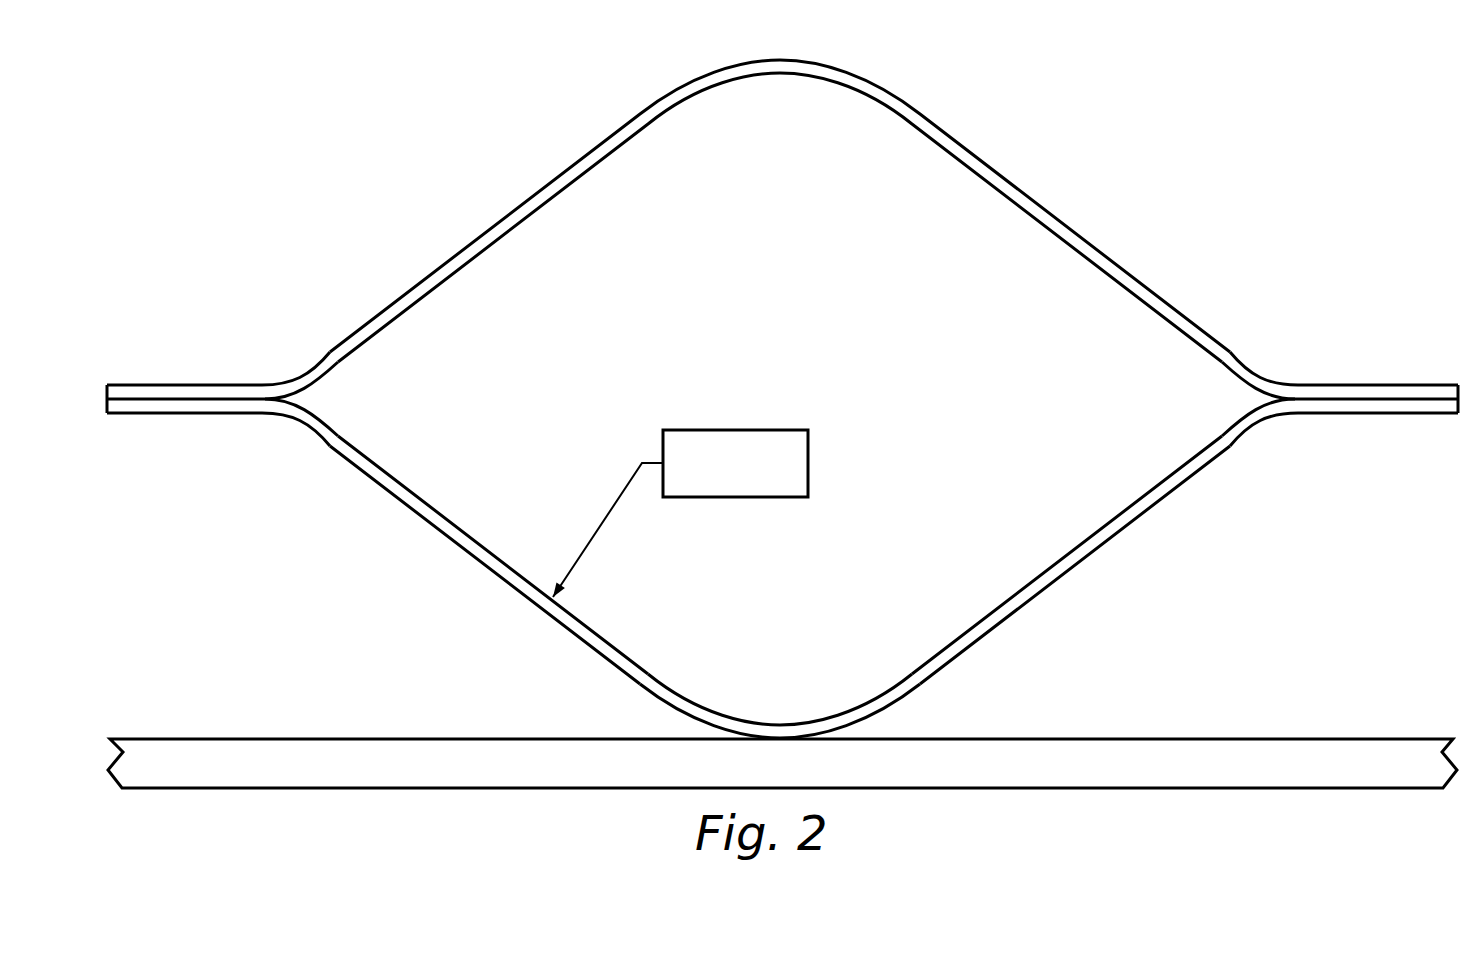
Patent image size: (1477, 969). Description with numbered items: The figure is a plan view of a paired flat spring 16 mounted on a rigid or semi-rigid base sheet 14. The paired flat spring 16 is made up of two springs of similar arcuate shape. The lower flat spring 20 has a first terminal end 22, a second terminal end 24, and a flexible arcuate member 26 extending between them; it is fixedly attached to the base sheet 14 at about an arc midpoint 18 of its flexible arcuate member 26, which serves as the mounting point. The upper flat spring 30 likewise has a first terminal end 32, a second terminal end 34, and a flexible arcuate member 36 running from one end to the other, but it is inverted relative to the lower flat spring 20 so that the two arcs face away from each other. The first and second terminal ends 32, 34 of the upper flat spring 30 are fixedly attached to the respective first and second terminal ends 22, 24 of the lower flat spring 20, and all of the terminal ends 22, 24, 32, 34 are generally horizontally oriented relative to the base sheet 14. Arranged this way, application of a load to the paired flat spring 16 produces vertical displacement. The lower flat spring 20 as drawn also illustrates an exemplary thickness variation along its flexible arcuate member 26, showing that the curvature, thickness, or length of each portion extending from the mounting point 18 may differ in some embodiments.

The rigid or semi-rigid base sheet 14 is at (1308, 750).
The paired flat spring 16 is at (280, 181).
The arc midpoint 18 is at (783, 723).
The lower flat spring 20 is at (480, 563).
The first terminal end 22 is at (1380, 413).
The second terminal end 24 is at (183, 413).
The flexible arcuate member 26 is at (1055, 585).
The upper flat spring 30 is at (509, 211).
The first terminal end 32 is at (1377, 385).
The second terminal end 34 is at (188, 385).
The flexible arcuate member 36 is at (1028, 190).